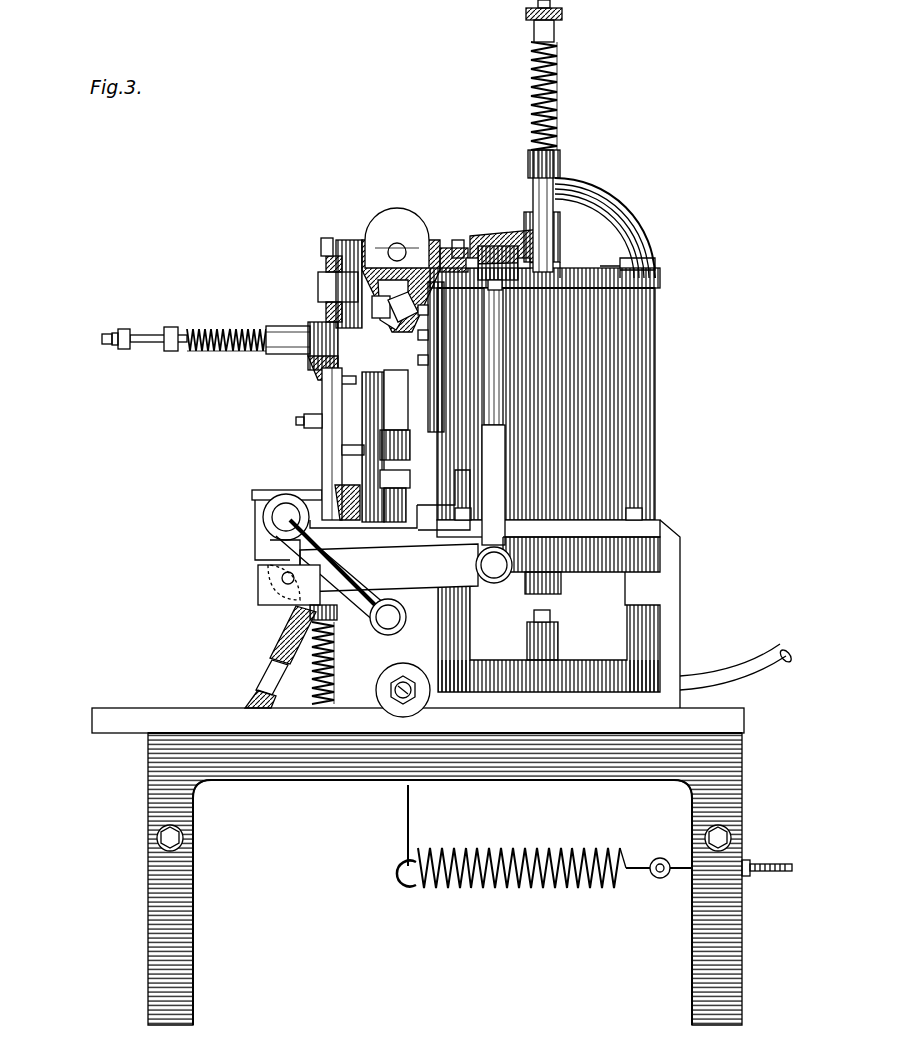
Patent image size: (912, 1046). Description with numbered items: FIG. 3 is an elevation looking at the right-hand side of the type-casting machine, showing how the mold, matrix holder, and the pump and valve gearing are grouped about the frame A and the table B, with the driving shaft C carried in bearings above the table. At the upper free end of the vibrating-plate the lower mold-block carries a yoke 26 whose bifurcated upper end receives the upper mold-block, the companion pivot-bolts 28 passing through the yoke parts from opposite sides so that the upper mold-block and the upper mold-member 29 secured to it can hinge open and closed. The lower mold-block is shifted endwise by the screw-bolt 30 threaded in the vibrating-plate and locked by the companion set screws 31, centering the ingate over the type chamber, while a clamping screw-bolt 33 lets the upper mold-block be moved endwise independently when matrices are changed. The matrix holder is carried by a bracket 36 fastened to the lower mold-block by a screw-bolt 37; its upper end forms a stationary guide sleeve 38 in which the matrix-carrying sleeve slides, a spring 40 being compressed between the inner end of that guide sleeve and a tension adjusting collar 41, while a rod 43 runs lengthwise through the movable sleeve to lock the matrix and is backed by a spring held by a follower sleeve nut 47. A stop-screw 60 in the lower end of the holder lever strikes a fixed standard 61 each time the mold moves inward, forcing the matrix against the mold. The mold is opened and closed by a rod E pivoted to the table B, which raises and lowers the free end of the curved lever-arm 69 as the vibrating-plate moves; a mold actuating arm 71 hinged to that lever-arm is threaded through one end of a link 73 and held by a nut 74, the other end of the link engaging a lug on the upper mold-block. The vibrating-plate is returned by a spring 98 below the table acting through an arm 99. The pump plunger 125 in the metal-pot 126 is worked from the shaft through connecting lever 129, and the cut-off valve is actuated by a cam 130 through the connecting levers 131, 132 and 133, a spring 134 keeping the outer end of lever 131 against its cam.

The frame A is at (265, 775).
The table B is at (182, 710).
The driving shaft C is at (282, 517).
The rod E is at (276, 660).
The yoke 26 is at (358, 242).
The pivot-bolts 28 is at (327, 240).
The upper mold-member 29 is at (378, 295).
The screw-bolt 30 is at (407, 297).
The set screws 31 is at (420, 342).
The clamping screw-bolt 33 is at (400, 210).
The bracket 36 is at (316, 332).
The screw-bolt 37 is at (344, 382).
The stationary guide sleeve 38 is at (283, 330).
The spring 40 is at (226, 352).
The tension adjusting collar 41 is at (174, 352).
The rod 43 is at (128, 328).
The follower sleeve nut 47 is at (160, 343).
The stop-screw 60 is at (302, 421).
The fixed standard 61 is at (342, 448).
The lever-arm 69 is at (388, 462).
The mold actuating arm 71 is at (345, 490).
The link 73 is at (102, 339).
The nut 74 is at (322, 270).
The spring 98 is at (541, 856).
The arm 99 is at (407, 790).
The pump plunger 125 is at (538, 192).
The metal-pot 126 is at (555, 488).
The connecting lever 129 is at (520, 240).
The cam 130 is at (270, 545).
The connecting lever 131 is at (380, 575).
The connecting lever 132 is at (496, 380).
The connecting lever 133 is at (532, 252).
The spring 134 is at (336, 667).